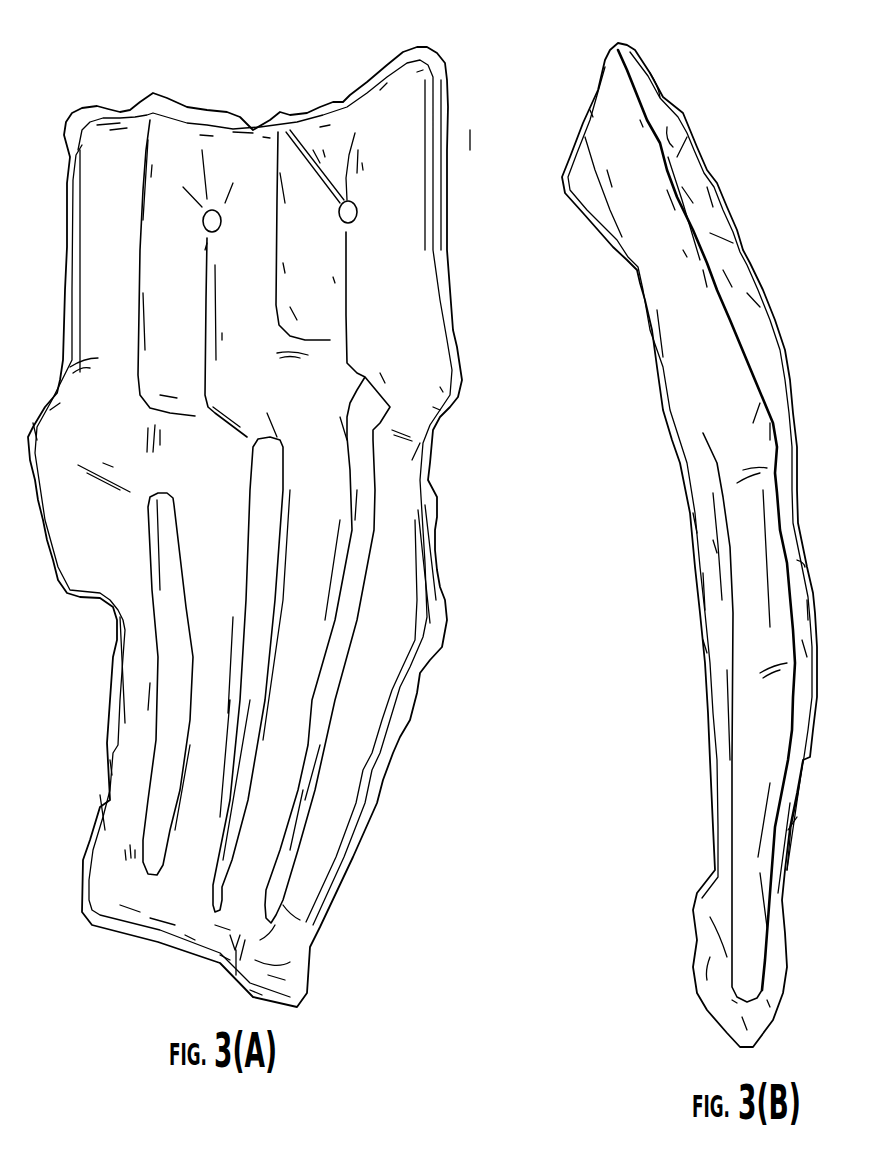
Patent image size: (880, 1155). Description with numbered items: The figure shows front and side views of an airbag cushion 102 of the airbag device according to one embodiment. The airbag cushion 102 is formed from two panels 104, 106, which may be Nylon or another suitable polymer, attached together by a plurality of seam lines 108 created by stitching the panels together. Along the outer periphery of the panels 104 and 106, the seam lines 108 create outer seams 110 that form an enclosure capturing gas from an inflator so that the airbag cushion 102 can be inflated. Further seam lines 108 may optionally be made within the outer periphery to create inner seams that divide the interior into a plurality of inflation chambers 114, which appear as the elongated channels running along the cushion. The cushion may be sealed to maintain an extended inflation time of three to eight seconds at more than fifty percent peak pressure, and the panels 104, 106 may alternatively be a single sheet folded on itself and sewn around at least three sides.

In FIG. 3A, the airbag cushion 102 is at (393, 683).
In FIG. 3B, the airbag cushion 102 is at (713, 650).
In FIG. 3B, the panel 104 is at (683, 422).
In FIG. 3B, the panel 106 is at (808, 390).
In FIG. 3A, the seam lines 108 is at (347, 288).
In FIG. 3A, the outer seams 110 is at (445, 110).
In FIG. 3A, the inflation chambers 114 is at (293, 682).